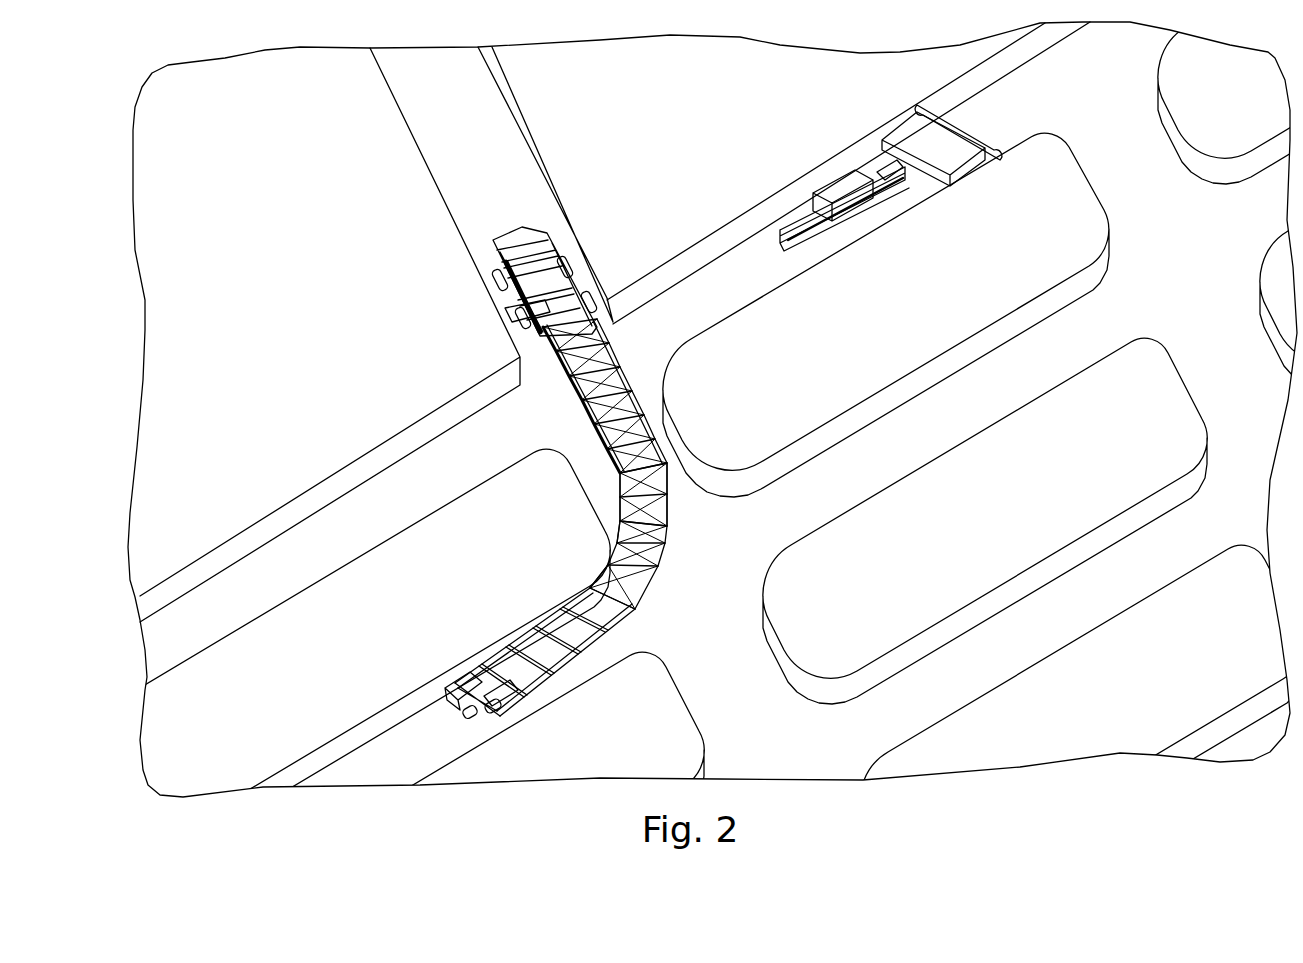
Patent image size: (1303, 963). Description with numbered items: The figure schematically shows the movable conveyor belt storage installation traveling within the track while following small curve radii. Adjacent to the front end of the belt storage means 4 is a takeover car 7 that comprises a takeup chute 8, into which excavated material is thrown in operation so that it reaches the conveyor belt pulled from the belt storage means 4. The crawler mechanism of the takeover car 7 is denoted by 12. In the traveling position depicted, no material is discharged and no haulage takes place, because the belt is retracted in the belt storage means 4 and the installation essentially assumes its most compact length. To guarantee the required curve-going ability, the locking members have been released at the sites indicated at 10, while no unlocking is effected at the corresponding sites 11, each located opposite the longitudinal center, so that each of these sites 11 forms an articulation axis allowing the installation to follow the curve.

The belt storage means 4 is at (650, 405).
The takeover car 7 is at (490, 288).
The takeup chute 8 is at (533, 262).
The sites with released locking members 10 is at (684, 465).
The sites without unlocking 11 is at (612, 519).
The crawler mechanism 12 is at (507, 310).